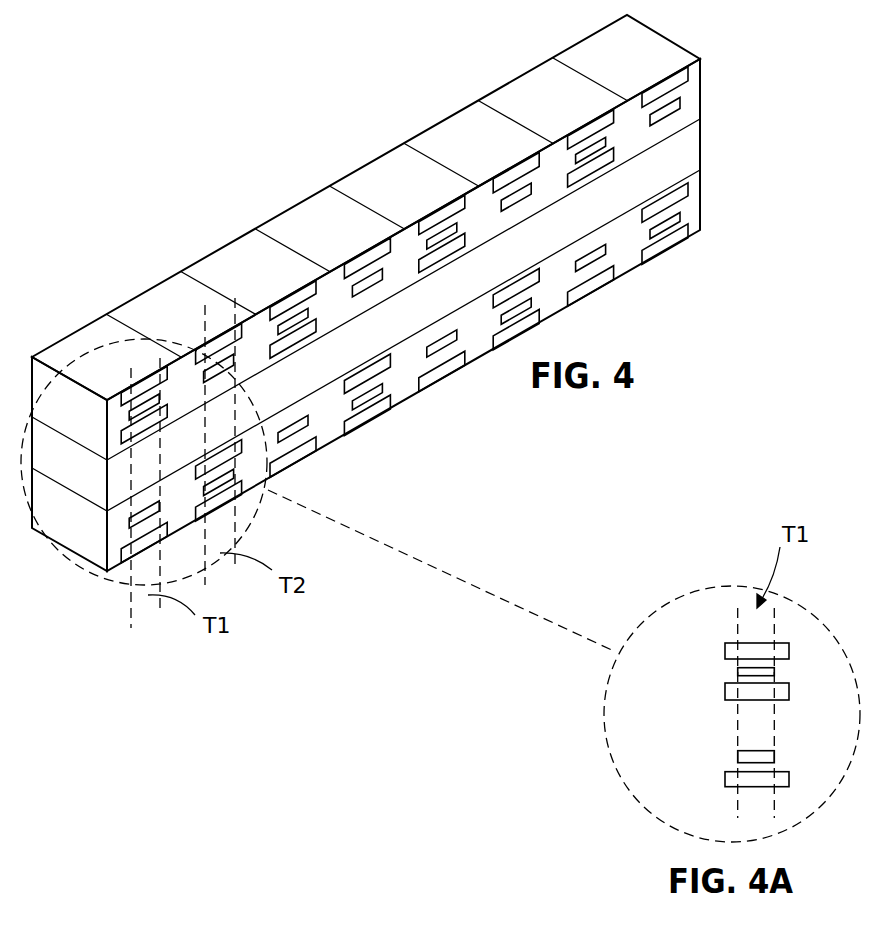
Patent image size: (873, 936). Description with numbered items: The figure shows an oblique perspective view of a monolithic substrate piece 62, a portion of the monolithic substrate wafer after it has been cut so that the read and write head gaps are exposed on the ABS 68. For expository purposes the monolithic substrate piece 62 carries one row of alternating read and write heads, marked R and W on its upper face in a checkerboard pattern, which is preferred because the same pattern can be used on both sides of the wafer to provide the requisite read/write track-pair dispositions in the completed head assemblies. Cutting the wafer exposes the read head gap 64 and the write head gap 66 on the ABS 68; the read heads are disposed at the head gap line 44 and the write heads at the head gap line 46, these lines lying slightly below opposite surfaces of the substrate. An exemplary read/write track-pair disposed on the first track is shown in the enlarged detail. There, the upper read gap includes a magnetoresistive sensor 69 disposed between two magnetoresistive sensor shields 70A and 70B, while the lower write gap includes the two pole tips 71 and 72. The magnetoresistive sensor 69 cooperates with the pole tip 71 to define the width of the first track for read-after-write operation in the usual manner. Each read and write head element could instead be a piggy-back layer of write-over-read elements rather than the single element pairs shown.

In FIG. 4, the monolithic substrate piece 62 is at (292, 131).
In FIG. 4, the head gap line 44 is at (683, 73).
In FIG. 4, the head gap line 46 is at (660, 249).
In FIG. 4, the read head gap 64 is at (678, 214).
In FIG. 4, the write head gap 66 is at (677, 105).
In FIG. 4, the ABS 68 is at (327, 417).
In FIG. 4A, the magnetoresistive sensor 69 is at (738, 671).
In FIG. 4A, the magnetoresistive sensor shield 70A is at (725, 650).
In FIG. 4A, the magnetoresistive sensor shield 70B is at (725, 690).
In FIG. 4A, the pole tip 71 is at (738, 757).
In FIG. 4A, the pole tip 72 is at (725, 777).